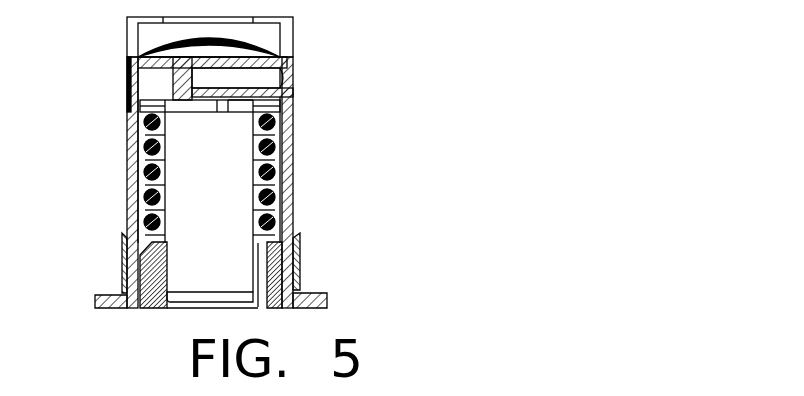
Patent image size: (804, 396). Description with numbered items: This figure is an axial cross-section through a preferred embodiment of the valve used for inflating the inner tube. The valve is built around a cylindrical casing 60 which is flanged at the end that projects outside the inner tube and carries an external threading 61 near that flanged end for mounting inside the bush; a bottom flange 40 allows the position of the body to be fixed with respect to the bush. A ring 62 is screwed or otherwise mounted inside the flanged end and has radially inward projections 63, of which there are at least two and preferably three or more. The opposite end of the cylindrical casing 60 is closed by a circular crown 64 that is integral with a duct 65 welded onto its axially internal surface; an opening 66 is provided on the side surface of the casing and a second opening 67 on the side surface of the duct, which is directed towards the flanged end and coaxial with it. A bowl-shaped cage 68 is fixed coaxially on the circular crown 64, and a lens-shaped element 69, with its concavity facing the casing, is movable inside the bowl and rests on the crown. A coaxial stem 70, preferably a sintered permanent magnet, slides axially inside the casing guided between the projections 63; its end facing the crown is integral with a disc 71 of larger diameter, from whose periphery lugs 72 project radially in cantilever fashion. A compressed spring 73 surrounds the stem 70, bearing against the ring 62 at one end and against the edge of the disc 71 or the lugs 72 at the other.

The bottom flange 40 is at (100, 298).
The cylindrical casing 60 is at (292, 213).
The external threading 61 is at (300, 268).
The ring 62 is at (300, 287).
The projections 63 is at (167, 243).
The circular crown 64 is at (290, 57).
The duct 65 is at (292, 96).
The opening 66 is at (272, 78).
The opening 67 is at (150, 145).
The bowl-shaped cage 68 is at (127, 35).
The lens-shaped element 69 is at (138, 53).
The stem 70 is at (207, 178).
The disc 71 is at (238, 105).
The lugs 72 is at (140, 105).
The compressed spring 73 is at (150, 196).